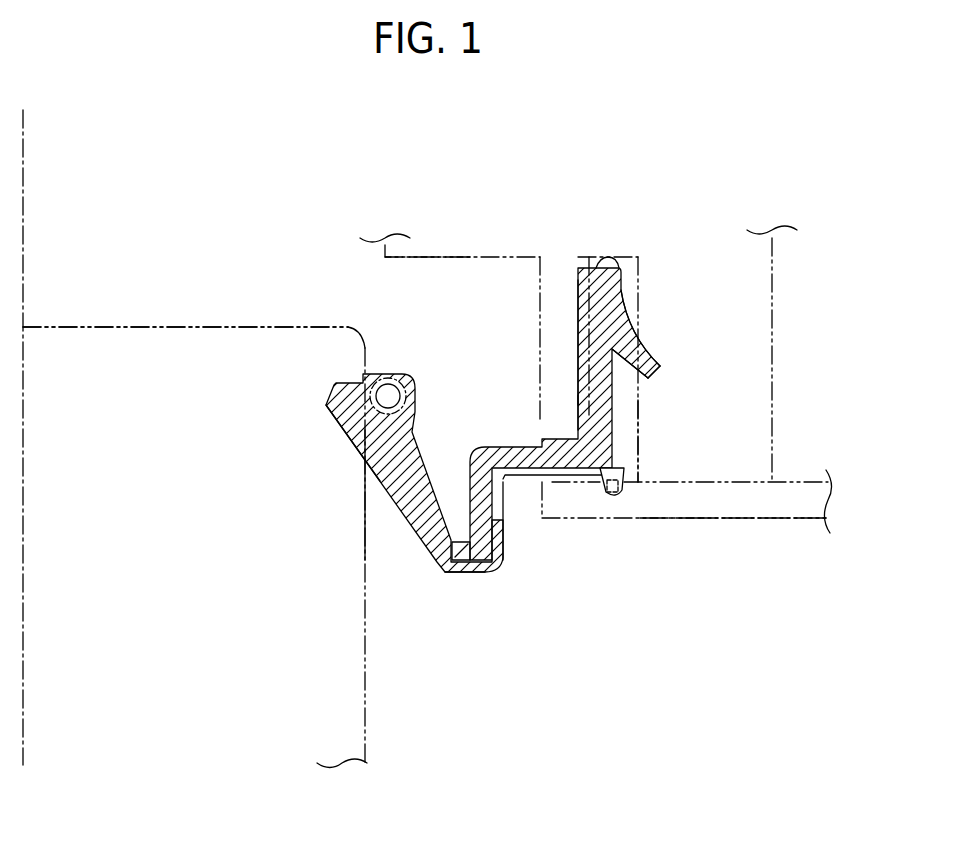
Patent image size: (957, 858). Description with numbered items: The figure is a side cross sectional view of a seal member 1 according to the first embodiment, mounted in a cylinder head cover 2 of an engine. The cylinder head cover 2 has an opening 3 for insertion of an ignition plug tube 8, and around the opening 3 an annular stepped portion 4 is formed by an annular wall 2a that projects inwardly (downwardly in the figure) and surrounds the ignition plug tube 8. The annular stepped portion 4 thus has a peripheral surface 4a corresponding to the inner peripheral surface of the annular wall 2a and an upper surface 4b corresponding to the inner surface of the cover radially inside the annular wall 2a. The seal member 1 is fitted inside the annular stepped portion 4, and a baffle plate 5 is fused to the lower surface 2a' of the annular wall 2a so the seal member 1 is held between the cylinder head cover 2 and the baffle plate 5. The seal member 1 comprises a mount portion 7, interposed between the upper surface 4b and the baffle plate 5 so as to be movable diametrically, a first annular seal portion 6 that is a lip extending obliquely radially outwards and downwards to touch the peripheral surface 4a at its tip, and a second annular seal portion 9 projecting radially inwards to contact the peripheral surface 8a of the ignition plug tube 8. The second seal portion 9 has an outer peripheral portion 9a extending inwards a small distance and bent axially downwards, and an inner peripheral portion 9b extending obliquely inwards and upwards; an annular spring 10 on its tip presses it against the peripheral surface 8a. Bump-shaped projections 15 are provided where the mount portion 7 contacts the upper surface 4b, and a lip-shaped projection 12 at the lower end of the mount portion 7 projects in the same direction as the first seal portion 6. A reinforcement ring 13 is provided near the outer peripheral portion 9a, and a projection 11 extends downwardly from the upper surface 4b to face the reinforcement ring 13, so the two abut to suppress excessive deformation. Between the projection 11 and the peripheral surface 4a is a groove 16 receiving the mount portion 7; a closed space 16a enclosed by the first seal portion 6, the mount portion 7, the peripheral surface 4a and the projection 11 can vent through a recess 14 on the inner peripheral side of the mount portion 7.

The seal member 1 is at (452, 597).
The cylinder head cover 2 is at (440, 263).
The annular wall 2a is at (794, 354).
The lower surface 2a' is at (764, 522).
The opening 3 is at (324, 242).
The annular stepped portion 4 is at (630, 446).
The peripheral surface 4a is at (634, 395).
The upper surface 4b is at (438, 262).
The baffle plate 5 is at (698, 508).
The first annular seal portion 6 is at (660, 368).
The mount portion 7 is at (597, 376).
The ignition plug tube 8 is at (357, 697).
The peripheral surface 8a is at (364, 548).
The second annular seal portion 9 is at (386, 522).
The outer peripheral portion 9a is at (507, 520).
The inner peripheral portion 9b is at (381, 486).
The annular spring 10 is at (401, 378).
The projection 11 is at (547, 342).
The projection 12 is at (600, 495).
The reinforcement ring 13 is at (528, 480).
The recess 14 is at (580, 401).
The bump-shaped projections 15 is at (604, 262).
The groove 16 is at (623, 356).
The closed space 16a is at (630, 289).